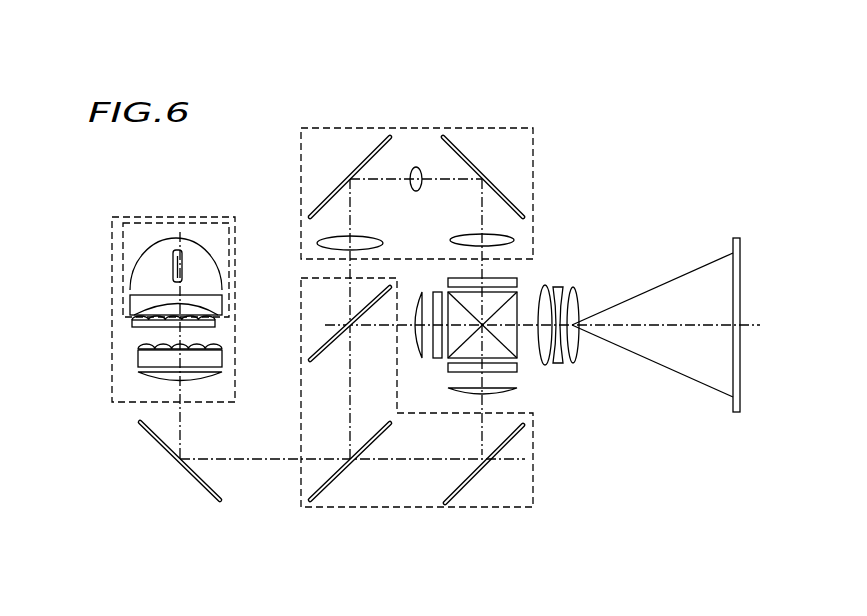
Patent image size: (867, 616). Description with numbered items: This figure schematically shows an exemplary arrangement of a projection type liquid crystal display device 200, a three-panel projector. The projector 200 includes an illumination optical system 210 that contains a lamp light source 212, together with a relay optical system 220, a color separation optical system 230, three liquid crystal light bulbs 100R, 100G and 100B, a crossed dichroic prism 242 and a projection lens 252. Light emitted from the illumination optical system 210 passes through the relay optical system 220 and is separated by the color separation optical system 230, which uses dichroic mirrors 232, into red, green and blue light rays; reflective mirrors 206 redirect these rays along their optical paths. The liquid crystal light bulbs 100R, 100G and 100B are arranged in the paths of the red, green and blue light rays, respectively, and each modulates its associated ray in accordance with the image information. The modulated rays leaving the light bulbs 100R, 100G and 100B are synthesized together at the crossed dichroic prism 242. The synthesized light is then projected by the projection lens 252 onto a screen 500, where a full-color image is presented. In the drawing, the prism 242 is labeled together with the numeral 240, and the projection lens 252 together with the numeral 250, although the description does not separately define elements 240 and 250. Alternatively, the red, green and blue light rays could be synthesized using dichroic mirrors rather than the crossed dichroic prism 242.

The projection type liquid crystal display device 200 is at (474, 71).
The reflective mirrors 206 is at (446, 151).
The illumination optical system 210 is at (115, 347).
The lamp light source 212 is at (125, 258).
The relay optical system 220 is at (512, 160).
The color separation optical system 230 is at (397, 495).
The dichroic mirrors 232 is at (312, 362).
The liquid crystal light bulb 100B is at (517, 281).
The liquid crystal light bulb 100G is at (439, 358).
The liquid crystal light bulb 100R is at (517, 370).
The projection lens group 240 is at (602, 327).
The crossed dichroic prism 242 is at (517, 300).
The projection lens group 250 is at (620, 349).
The projection lens 252 is at (558, 364).
The screen 500 is at (736, 238).